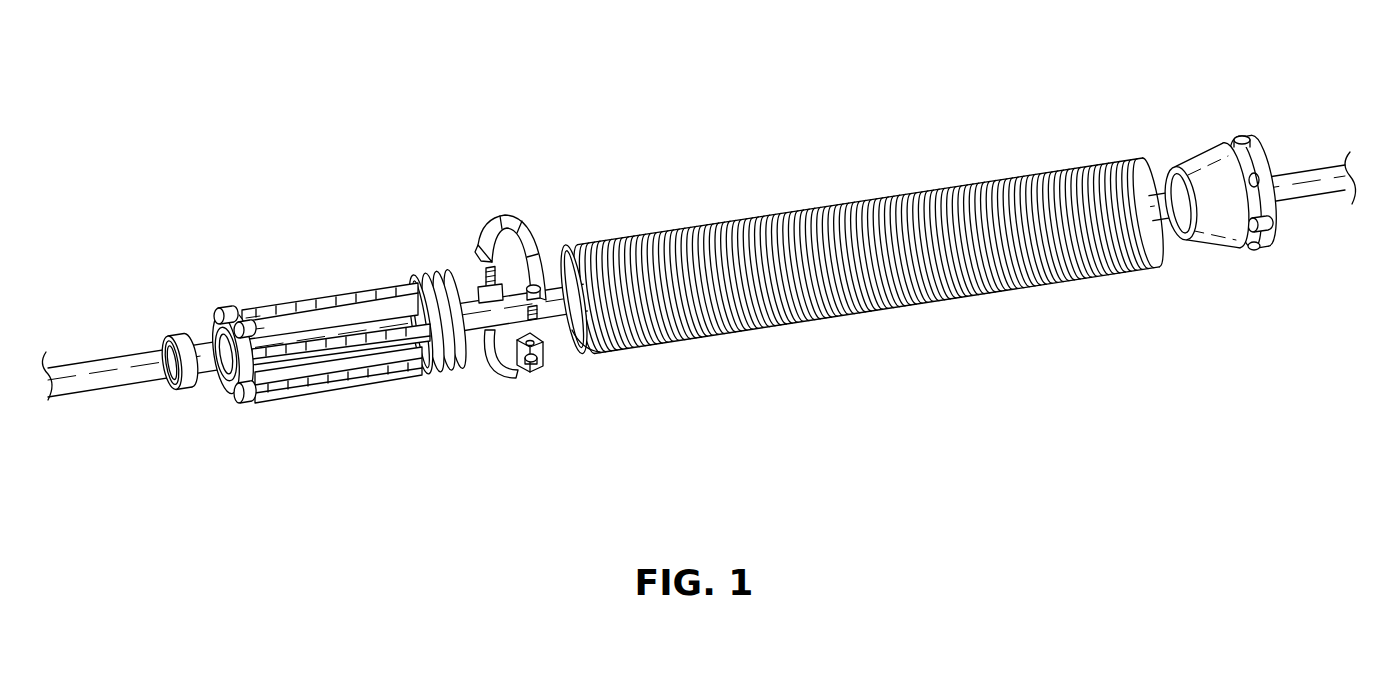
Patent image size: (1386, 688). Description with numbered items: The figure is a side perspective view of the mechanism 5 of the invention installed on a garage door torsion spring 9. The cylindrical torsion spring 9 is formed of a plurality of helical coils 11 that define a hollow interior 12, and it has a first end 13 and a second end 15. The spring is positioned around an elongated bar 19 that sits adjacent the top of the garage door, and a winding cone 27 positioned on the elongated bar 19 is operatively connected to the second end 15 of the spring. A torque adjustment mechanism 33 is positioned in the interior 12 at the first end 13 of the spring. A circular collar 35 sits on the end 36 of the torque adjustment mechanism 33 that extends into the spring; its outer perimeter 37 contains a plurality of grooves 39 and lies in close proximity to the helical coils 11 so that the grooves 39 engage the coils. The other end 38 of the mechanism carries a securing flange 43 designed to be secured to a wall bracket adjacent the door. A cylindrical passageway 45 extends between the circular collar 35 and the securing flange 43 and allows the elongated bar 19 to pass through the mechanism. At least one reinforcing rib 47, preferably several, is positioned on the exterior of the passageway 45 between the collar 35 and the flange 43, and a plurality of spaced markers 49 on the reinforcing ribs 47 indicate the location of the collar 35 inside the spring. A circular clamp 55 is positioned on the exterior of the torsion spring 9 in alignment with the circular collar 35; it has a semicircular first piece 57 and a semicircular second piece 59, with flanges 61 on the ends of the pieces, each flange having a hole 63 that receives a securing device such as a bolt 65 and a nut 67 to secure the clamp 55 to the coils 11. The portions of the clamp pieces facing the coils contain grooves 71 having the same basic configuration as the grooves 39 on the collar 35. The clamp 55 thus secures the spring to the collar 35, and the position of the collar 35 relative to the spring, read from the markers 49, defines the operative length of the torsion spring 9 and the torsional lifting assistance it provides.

The mechanism 5 is at (684, 109).
The torsion spring 9 is at (816, 247).
The helical coils 11 is at (945, 187).
The hollow interior 12 is at (585, 250).
The first end 13 is at (553, 258).
The second end 15 is at (1140, 165).
The elongated bar 19 is at (112, 360).
The winding cone 27 is at (1228, 145).
The torque adjustment mechanism 33 is at (302, 298).
The circular collar 35 is at (420, 377).
The end 36 is at (405, 377).
The outer perimeter 37 is at (440, 275).
The other end 38 is at (253, 400).
The grooves 39 is at (432, 276).
The securing flange 43 is at (243, 348).
The cylindrical passageway 45 is at (220, 387).
The reinforcing rib 47 is at (263, 302).
The spaced markers 49 is at (349, 292).
The circular clamp 55 is at (520, 370).
The semicircular first piece 57 is at (512, 370).
The semicircular second piece 59 is at (511, 212).
The flanges 61 is at (470, 280).
The hole 63 is at (508, 347).
The bolt 65 is at (484, 258).
The nut 67 is at (530, 360).
The grooves 71 is at (490, 347).